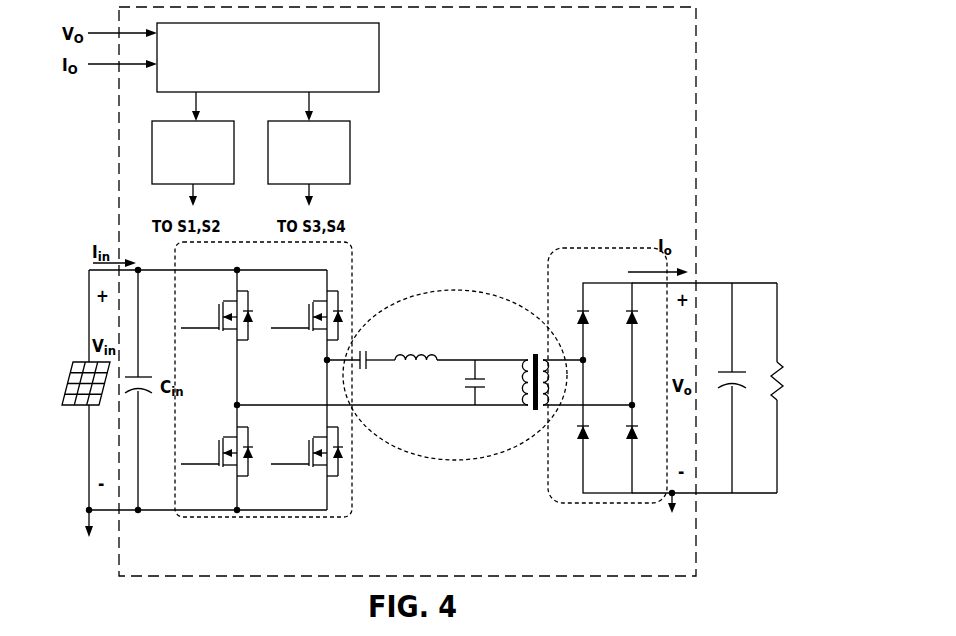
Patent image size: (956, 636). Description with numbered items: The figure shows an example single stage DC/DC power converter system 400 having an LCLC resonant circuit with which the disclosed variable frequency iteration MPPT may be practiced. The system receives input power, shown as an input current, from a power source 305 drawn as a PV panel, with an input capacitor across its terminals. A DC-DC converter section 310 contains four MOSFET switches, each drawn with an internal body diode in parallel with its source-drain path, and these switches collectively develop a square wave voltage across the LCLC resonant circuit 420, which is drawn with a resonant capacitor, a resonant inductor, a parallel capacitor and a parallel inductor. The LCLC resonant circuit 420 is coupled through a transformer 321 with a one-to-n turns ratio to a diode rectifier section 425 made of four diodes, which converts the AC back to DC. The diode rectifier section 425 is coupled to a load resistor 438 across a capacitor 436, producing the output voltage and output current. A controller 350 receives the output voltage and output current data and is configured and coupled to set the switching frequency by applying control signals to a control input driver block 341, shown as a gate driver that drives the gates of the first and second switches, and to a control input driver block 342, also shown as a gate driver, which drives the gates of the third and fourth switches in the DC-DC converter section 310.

The single stage DC/DC power converter system 400 is at (696, 54).
The controller 350 is at (285, 71).
The control input driver block 341 is at (152, 156).
The control input driver block 342 is at (350, 143).
The power source 305 is at (62, 394).
The DC-DC converter section 310 is at (248, 518).
The LCLC resonant circuit 420 is at (450, 290).
The transformer 321 is at (526, 407).
The diode rectifier section 425 is at (612, 248).
The capacitor 436 is at (733, 355).
The load resistor 438 is at (784, 372).